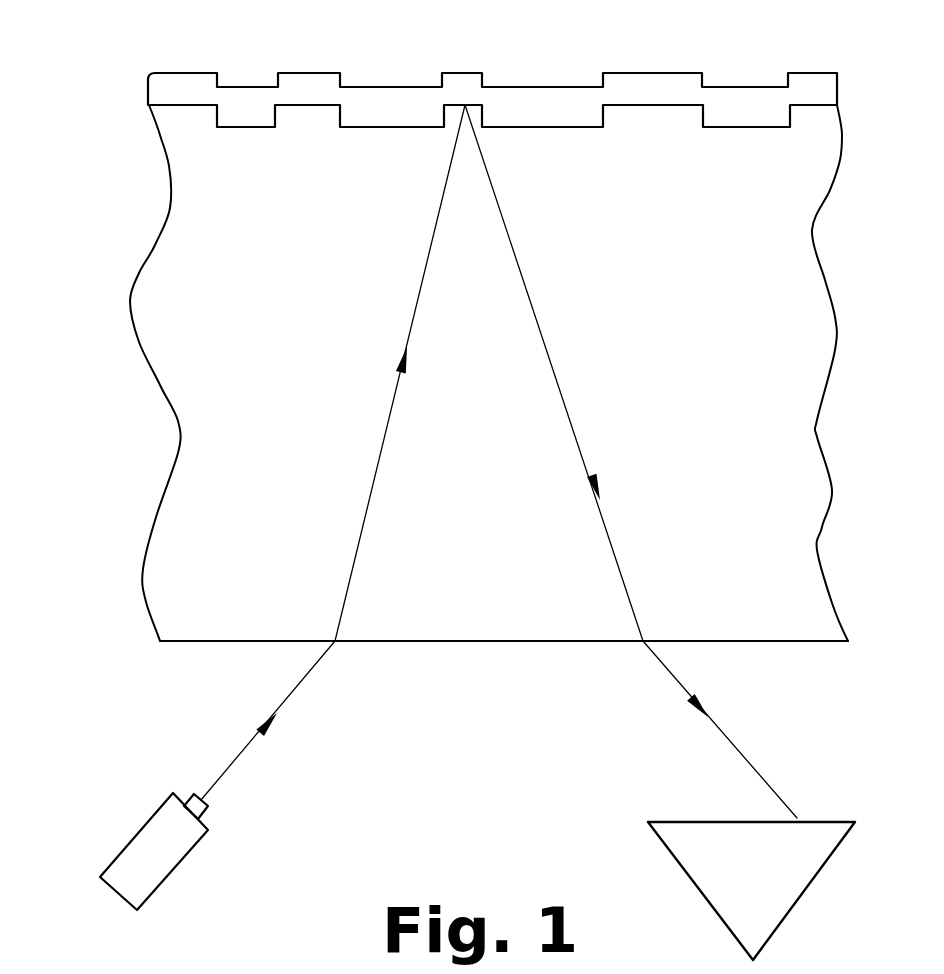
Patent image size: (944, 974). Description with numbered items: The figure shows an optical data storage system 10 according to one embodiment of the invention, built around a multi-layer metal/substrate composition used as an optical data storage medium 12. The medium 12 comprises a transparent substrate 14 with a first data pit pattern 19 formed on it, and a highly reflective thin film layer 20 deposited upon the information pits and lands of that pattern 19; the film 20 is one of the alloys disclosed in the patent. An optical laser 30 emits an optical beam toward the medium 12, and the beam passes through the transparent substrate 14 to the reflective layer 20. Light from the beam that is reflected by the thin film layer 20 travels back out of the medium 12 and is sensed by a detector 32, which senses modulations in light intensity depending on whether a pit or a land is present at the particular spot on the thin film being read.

The optical data storage system 10 is at (495, 690).
The optical storage medium 12 is at (118, 458).
The transparent substrate 14 is at (750, 510).
The first data pit pattern 19 is at (720, 129).
The highly reflective thin film layer 20 is at (636, 86).
The optical laser 30 is at (177, 868).
The detector 32 is at (795, 903).